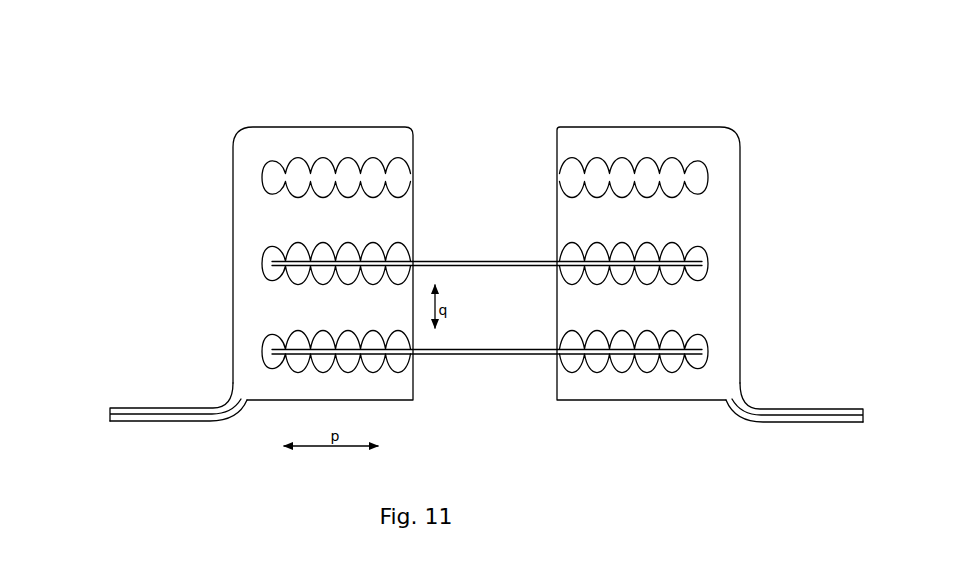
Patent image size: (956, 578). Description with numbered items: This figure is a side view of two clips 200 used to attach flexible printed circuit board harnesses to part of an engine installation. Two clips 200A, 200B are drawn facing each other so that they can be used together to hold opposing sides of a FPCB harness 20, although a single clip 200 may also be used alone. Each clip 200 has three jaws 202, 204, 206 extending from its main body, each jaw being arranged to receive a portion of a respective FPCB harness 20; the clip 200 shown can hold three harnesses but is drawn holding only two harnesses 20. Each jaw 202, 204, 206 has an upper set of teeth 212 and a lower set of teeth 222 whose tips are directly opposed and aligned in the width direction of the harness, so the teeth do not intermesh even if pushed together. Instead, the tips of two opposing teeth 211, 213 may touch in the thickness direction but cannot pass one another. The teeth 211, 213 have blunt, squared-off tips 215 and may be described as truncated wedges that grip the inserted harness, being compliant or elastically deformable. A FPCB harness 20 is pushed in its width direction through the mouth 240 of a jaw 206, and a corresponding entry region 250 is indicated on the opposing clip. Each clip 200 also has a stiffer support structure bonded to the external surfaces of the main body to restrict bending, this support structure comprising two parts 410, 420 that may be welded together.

The clip 200 is at (278, 108).
The first clip 200A is at (400, 418).
The second clip 200B is at (652, 416).
The jaw 202 is at (272, 176).
The jaw 204 is at (262, 254).
The jaw 206 is at (262, 341).
The upper set of teeth 212 is at (409, 168).
The lower set of teeth 222 is at (288, 198).
The tooth 211 is at (563, 171).
The blunt tip 215 is at (587, 172).
The tooth 213 is at (565, 188).
The FPCB harness 20 is at (488, 266).
The mouth 240 is at (415, 352).
The wire entry point 250 is at (562, 350).
The support structure part 410 is at (130, 421).
The support structure part 420 is at (172, 423).